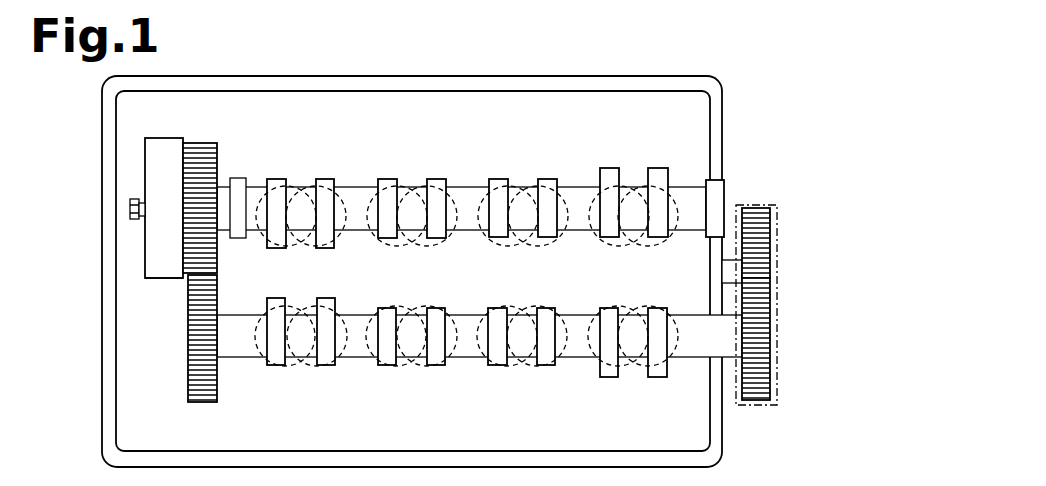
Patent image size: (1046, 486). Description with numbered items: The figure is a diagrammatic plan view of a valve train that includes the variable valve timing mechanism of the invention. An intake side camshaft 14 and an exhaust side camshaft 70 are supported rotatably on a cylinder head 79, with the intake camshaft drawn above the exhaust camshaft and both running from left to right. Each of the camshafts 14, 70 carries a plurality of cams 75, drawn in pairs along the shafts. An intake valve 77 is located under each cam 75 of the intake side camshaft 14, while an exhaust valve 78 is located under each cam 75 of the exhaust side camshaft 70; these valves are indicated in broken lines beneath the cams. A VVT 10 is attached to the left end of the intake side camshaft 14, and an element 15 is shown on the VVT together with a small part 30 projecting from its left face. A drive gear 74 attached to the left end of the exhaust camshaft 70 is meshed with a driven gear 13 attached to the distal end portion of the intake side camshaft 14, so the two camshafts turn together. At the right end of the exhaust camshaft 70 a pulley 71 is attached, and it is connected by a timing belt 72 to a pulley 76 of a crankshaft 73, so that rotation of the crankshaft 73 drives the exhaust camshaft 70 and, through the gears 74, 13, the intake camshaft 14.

The VVT 10 is at (142, 136).
The driven gear 13 is at (200, 143).
The intake side camshaft 14 is at (357, 185).
The motor housing 15 is at (162, 279).
The motor terminal nut 30 is at (130, 209).
The exhaust side camshaft 70 is at (690, 352).
The pulley 71 is at (762, 340).
The timing belt 72 is at (752, 205).
The crankshaft 73 is at (727, 272).
The drive gear 74 is at (188, 388).
The cams 75 is at (667, 379).
The pulley 76 is at (763, 248).
The intake valve 77 is at (467, 230).
The exhaust valve 78 is at (466, 319).
The cylinder head 79 is at (422, 78).